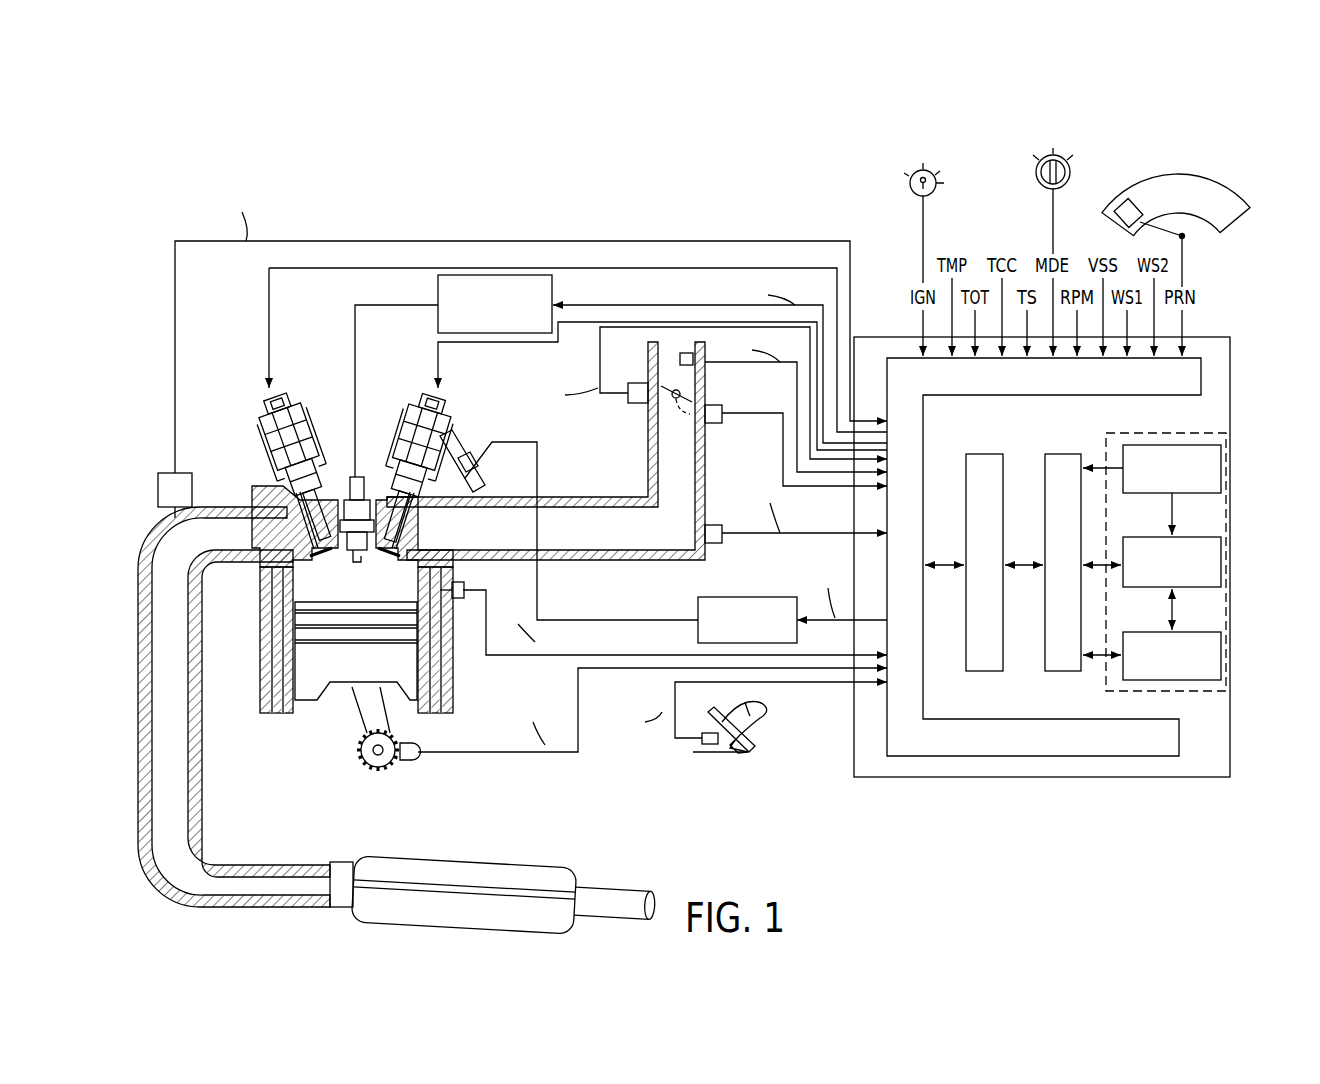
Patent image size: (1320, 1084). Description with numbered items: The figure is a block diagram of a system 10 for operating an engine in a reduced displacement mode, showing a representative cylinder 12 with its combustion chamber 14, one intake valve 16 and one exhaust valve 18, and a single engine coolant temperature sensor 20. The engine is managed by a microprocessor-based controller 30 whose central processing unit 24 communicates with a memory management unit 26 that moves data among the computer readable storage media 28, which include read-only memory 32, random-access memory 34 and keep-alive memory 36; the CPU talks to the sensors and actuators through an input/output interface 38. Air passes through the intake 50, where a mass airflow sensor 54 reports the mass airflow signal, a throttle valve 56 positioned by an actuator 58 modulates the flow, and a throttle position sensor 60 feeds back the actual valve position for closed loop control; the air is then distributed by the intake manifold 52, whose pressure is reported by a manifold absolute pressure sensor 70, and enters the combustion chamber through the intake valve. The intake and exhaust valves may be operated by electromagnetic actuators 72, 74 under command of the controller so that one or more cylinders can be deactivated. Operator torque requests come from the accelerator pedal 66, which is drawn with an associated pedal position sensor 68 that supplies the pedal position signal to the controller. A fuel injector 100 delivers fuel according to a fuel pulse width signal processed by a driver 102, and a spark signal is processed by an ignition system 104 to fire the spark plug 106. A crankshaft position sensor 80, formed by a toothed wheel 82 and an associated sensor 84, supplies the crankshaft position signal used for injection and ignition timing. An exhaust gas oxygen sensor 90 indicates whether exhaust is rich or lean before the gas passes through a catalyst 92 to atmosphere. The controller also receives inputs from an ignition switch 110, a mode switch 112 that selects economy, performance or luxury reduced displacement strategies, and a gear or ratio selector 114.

The system 10 is at (612, 222).
The cylinder 12 is at (293, 703).
The combustion chamber 14 is at (310, 588).
The intake valve 16 is at (378, 560).
The exhaust valve 18 is at (305, 548).
The engine coolant temperature sensor 20 is at (465, 588).
The central processing unit 24 is at (985, 454).
The memory management unit 26 is at (1063, 454).
The computer readable storage media 28 is at (1196, 697).
The controller 30 is at (1232, 392).
The read-only memory 32 is at (1190, 445).
The random-access memory 34 is at (1190, 632).
The keep-alive memory 36 is at (1190, 537).
The input/output interface 38 is at (955, 745).
The intake 50 is at (666, 470).
The intake manifold 52 is at (600, 518).
The mass airflow sensor 54 is at (687, 352).
The throttle valve 56 is at (665, 405).
The actuator 58 is at (636, 383).
The throttle position sensor 60 is at (725, 410).
The accelerator pedal 66 is at (740, 756).
The pedal position sensor 68 is at (700, 742).
The manifold absolute pressure sensor 70 is at (712, 525).
The electromagnetic actuator 72 is at (458, 422).
The electromagnetic actuator 74 is at (280, 395).
The crankshaft position sensor 80 is at (375, 787).
The toothed wheel 82 is at (383, 782).
The sensor 84 is at (405, 762).
The exhaust gas oxygen sensor 90 is at (165, 473).
The catalyst 92 is at (475, 862).
The fuel injector 100 is at (480, 481).
The driver 102 is at (745, 597).
The ignition system 104 is at (553, 297).
The spark plug 106 is at (362, 470).
The ignition switch 110 is at (860, 157).
The mode switch 112 is at (1000, 127).
The gear or ratio selector 114 is at (1188, 157).